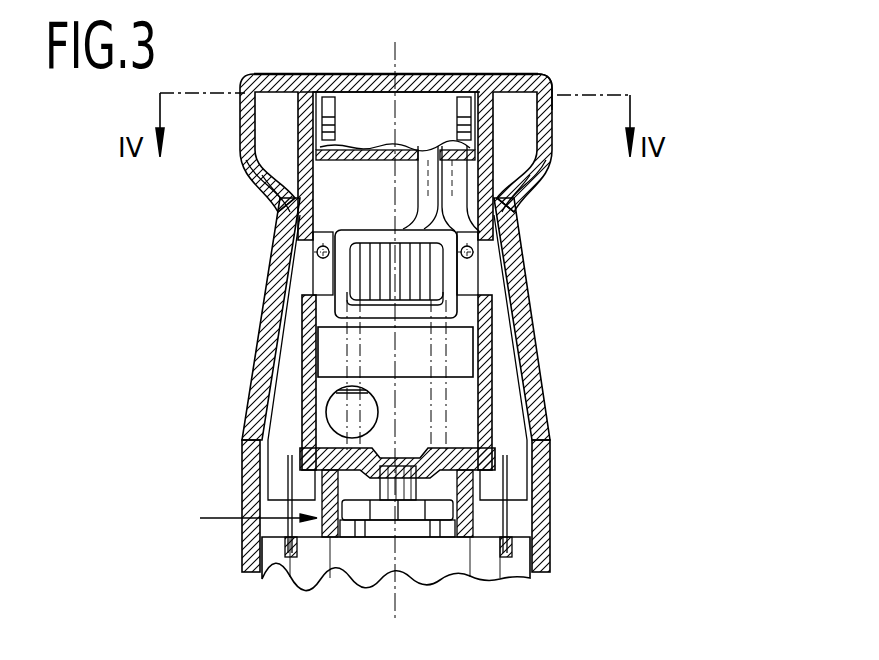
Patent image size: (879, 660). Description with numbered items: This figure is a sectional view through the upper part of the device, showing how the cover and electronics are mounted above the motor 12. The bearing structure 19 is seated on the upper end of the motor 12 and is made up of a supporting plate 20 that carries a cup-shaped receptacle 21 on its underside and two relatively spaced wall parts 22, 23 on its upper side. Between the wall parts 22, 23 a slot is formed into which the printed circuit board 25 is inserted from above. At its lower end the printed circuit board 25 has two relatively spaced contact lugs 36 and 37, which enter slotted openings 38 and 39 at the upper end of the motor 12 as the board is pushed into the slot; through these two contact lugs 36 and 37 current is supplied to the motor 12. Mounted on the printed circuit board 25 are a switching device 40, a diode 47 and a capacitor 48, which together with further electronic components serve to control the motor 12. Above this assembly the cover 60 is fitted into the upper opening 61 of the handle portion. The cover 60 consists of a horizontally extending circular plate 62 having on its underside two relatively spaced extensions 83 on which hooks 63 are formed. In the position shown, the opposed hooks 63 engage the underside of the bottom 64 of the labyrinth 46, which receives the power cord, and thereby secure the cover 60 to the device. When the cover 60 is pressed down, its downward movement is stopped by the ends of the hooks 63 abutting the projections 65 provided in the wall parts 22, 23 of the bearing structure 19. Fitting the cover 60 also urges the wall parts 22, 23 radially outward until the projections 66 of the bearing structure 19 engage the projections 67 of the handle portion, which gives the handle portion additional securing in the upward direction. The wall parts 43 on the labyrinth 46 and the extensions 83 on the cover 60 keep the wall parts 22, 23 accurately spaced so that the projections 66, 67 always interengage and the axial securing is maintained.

The motor 12 is at (406, 572).
The bearing structure 19 is at (246, 517).
The supporting plate 20 is at (472, 458).
The cup-shaped receptacle 21 is at (490, 553).
The wall part 22 is at (510, 172).
The wall part 23 is at (307, 148).
The printed circuit board 25 is at (505, 388).
The contact lug 36 is at (290, 474).
The contact lug 37 is at (505, 520).
The slotted opening 38 is at (281, 577).
The slotted opening 39 is at (508, 556).
The switching device 40 is at (356, 265).
The wall part 43 is at (336, 130).
The labyrinth 46 is at (380, 117).
The diode 47 is at (333, 410).
The capacitor 48 is at (455, 350).
The cover 60 is at (333, 64).
The upper opening 61 is at (514, 76).
The circular plate 62 is at (355, 78).
The hook 63 is at (285, 183).
The bottom 64 is at (343, 160).
The projection 65 is at (290, 200).
The projection 66 is at (512, 225).
The projection 67 is at (295, 233).
The extension 83 is at (478, 145).